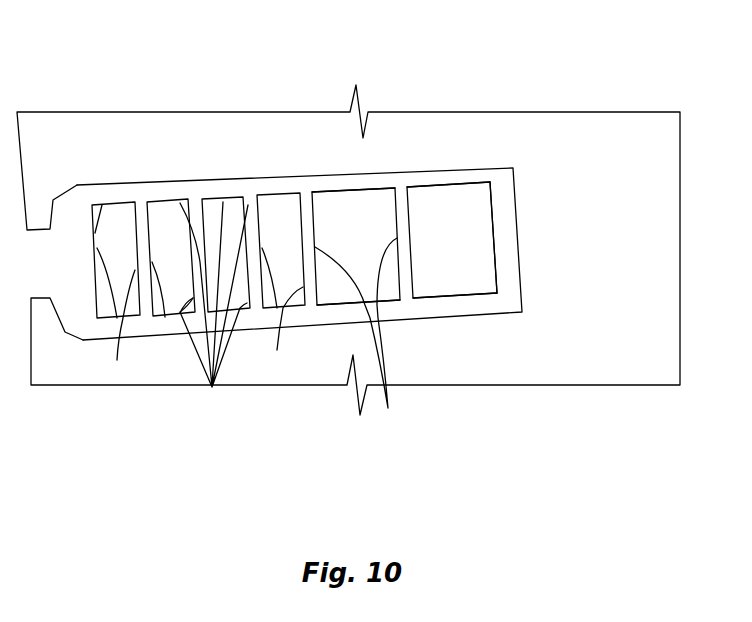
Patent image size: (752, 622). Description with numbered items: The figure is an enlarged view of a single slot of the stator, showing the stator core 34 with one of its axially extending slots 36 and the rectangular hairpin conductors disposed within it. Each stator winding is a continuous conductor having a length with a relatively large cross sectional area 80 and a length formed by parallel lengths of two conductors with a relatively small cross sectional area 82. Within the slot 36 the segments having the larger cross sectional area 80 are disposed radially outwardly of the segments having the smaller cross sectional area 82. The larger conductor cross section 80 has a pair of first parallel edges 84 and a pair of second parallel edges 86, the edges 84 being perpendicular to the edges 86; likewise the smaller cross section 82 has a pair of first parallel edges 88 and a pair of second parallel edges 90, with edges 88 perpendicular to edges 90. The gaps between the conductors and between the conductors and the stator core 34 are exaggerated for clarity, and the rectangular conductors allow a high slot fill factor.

The stator core 34 is at (670, 248).
The axially extending slots 36 is at (507, 173).
The relatively large cross sectional area 80 is at (425, 192).
The relatively small cross sectional area 82 is at (265, 198).
The first parallel edges 84 is at (335, 190).
The second parallel edges 86 is at (415, 285).
The first parallel edges 88 is at (95, 280).
The second parallel edges 90 is at (117, 318).